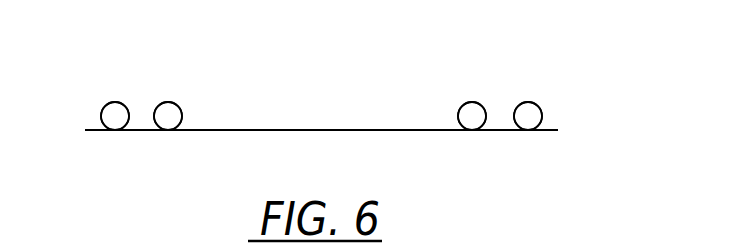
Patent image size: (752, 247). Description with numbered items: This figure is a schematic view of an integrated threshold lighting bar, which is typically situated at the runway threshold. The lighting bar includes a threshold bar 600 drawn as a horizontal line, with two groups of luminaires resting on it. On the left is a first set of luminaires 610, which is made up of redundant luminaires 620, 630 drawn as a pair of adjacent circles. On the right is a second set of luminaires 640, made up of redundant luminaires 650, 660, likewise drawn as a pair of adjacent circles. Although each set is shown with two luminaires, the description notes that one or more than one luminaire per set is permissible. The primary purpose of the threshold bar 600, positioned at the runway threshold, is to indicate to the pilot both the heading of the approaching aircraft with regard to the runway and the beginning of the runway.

The threshold bar 600 is at (353, 88).
The first set of luminaires 610 is at (160, 102).
The redundant luminaire 620 is at (112, 103).
The redundant luminaire 630 is at (181, 105).
The second set of luminaires 640 is at (520, 102).
The redundant luminaire 650 is at (462, 106).
The redundant luminaire 660 is at (538, 105).